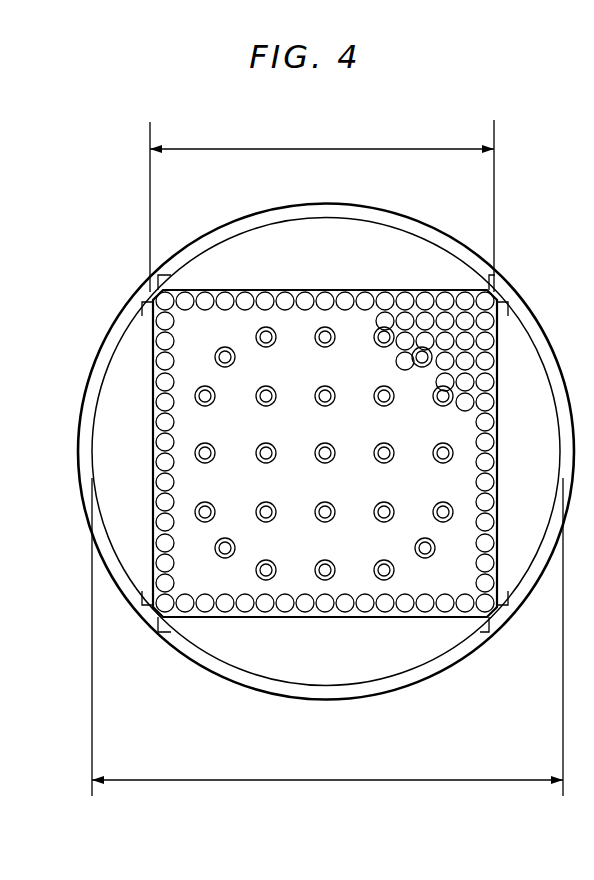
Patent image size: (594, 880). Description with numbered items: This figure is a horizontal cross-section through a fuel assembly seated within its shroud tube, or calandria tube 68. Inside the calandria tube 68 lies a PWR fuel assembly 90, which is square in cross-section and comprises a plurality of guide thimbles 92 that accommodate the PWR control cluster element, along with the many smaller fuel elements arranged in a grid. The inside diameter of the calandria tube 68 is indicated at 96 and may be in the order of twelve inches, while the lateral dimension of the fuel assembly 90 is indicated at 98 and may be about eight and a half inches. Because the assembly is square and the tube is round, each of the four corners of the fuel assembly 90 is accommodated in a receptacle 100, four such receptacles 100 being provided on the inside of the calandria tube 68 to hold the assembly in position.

The calandria tube 68 is at (438, 228).
The PWR fuel assembly 90 is at (497, 418).
The guide thimbles 92 is at (434, 550).
The inside diameter of the calandria tube 96 is at (353, 784).
The lateral dimension of the fuel assembly 98 is at (332, 148).
The receptacle 100 is at (165, 290).